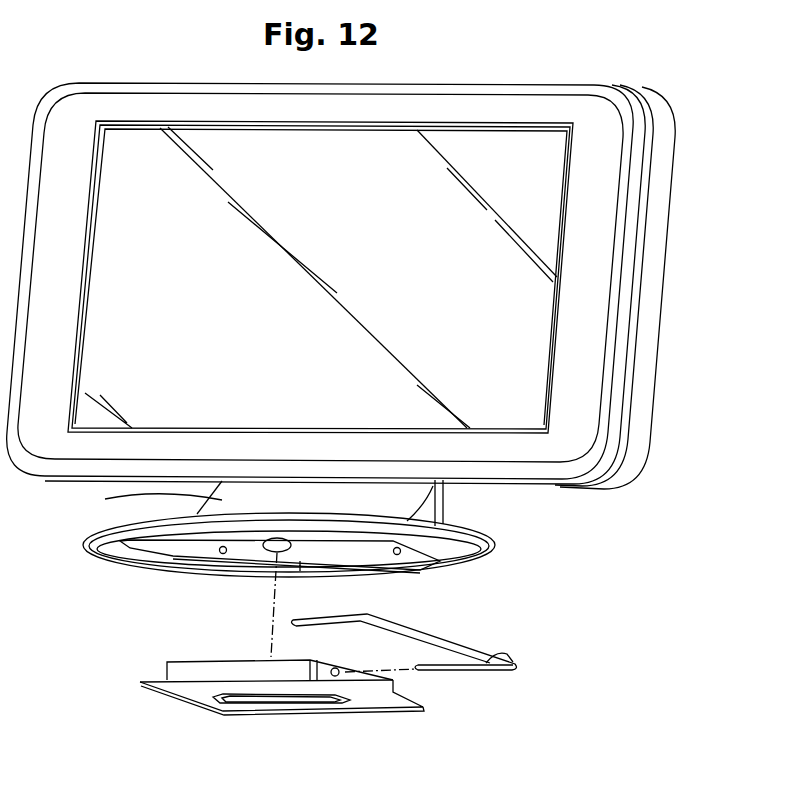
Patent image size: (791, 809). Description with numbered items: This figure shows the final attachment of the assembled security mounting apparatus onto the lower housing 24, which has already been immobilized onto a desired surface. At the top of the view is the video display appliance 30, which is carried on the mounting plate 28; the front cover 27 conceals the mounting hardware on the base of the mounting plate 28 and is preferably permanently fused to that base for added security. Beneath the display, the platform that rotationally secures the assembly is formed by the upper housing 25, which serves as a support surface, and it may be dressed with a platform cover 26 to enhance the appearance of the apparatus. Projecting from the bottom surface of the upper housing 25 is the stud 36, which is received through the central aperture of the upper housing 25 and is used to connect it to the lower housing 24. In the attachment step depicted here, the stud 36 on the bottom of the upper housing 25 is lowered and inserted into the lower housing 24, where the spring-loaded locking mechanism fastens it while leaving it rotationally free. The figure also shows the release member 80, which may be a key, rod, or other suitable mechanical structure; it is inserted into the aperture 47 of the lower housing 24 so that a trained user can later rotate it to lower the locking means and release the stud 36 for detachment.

The video display appliance 30 is at (510, 103).
The mounting plate 28 is at (455, 492).
The front cover 27 is at (105, 499).
The platform cover 26 is at (490, 545).
The upper housing 25 is at (446, 575).
The stud 36 is at (272, 557).
The lower housing 24 is at (163, 703).
The aperture 47 is at (338, 669).
The release member 80 is at (510, 657).